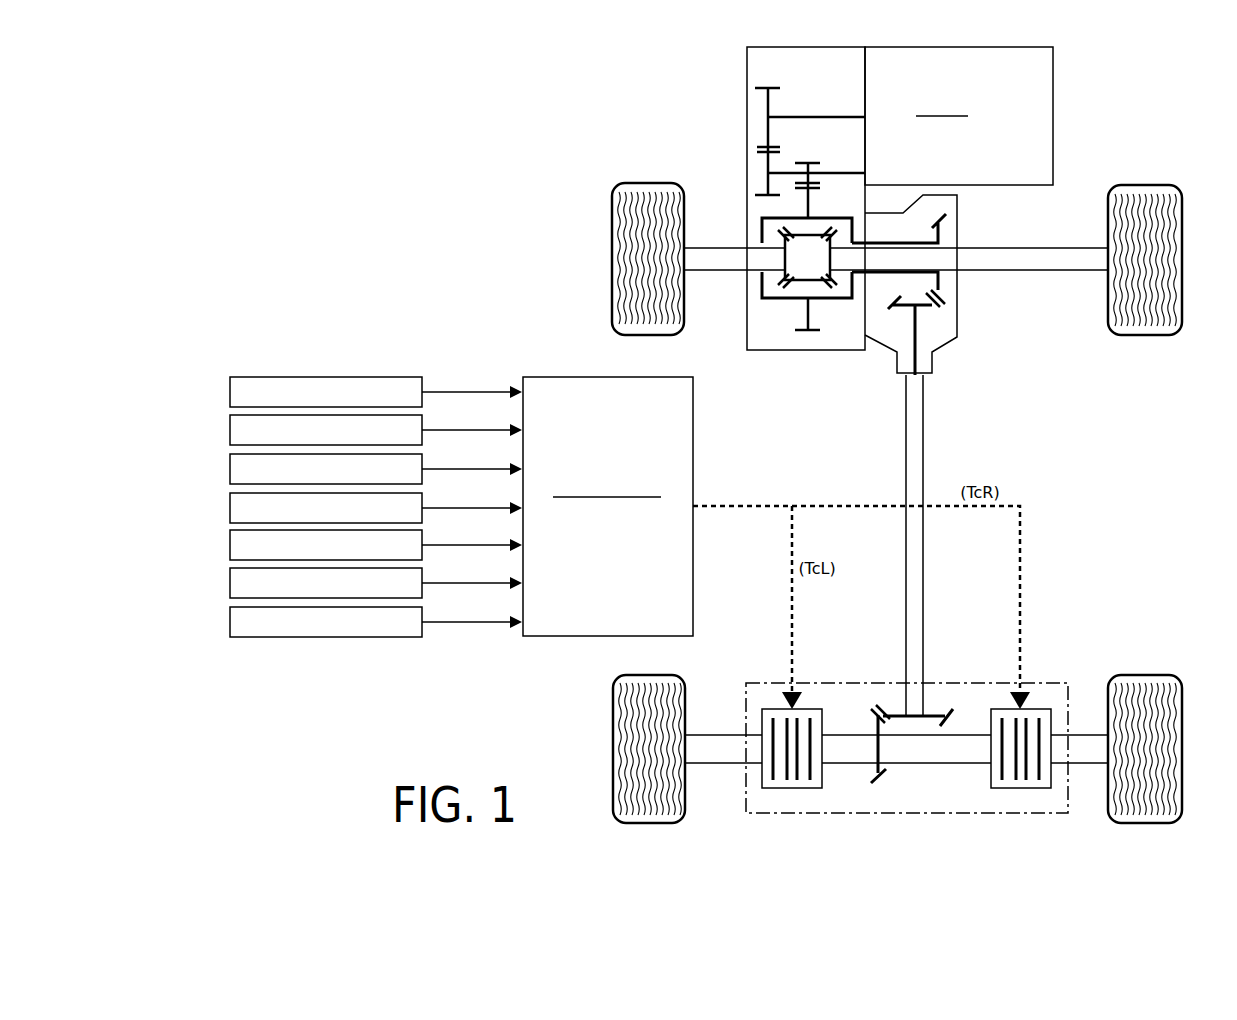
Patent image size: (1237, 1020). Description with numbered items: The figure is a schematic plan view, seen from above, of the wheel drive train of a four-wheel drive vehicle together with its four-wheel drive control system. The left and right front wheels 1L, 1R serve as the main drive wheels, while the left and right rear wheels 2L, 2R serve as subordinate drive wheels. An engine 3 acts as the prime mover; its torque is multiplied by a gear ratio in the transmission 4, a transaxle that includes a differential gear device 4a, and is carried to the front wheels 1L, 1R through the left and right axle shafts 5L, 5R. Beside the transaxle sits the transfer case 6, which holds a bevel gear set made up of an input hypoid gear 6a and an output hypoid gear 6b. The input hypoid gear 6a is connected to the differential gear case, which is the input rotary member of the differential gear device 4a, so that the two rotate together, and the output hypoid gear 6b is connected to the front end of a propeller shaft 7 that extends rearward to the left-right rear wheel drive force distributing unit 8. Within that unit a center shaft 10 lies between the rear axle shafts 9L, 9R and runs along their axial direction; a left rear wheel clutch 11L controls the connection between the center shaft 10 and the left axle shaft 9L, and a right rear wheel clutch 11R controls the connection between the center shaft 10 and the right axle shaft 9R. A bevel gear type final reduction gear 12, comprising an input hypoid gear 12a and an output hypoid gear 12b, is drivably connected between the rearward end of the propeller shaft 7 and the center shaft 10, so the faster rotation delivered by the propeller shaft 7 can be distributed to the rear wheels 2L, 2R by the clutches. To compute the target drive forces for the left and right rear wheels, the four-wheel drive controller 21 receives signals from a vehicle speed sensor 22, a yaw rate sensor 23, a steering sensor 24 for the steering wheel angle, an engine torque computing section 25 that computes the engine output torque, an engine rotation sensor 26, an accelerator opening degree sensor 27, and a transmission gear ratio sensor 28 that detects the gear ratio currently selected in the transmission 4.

The left front wheel 1L is at (636, 183).
The right front wheel 1R is at (1148, 185).
The left rear wheel 2L is at (613, 700).
The right rear wheel 2R is at (1148, 675).
The engine 3 is at (1053, 52).
The transmission 4 is at (747, 65).
The differential gear device 4a is at (771, 302).
The left axle shaft 5L is at (719, 246).
The right axle shaft 5R is at (1048, 247).
The transfer case 6 is at (957, 314).
The input hypoid gear 6a is at (942, 285).
The output hypoid gear 6b is at (925, 310).
The propeller shaft 7 is at (923, 428).
The left-right rear wheel drive force distributing unit 8 is at (974, 683).
The left rear wheel axle shaft 9L is at (719, 763).
The right rear wheel axle shaft 9R is at (1092, 763).
The center shaft 10 is at (948, 763).
The left rear wheel clutch 11L is at (787, 788).
The right rear wheel clutch 11R is at (1033, 788).
The final reduction gear 12 is at (880, 700).
The input hypoid gear 12a is at (883, 708).
The output hypoid gear 12b is at (875, 718).
The four-wheel drive controller 21 is at (545, 377).
The vehicle speed sensor 22 is at (230, 388).
The yaw rate sensor 23 is at (230, 426).
The steering sensor 24 is at (230, 465).
The engine torque computing section 25 is at (230, 504).
The engine rotation sensor 26 is at (230, 541).
The accelerator opening degree sensor 27 is at (230, 579).
The transmission gear ratio sensor 28 is at (230, 618).